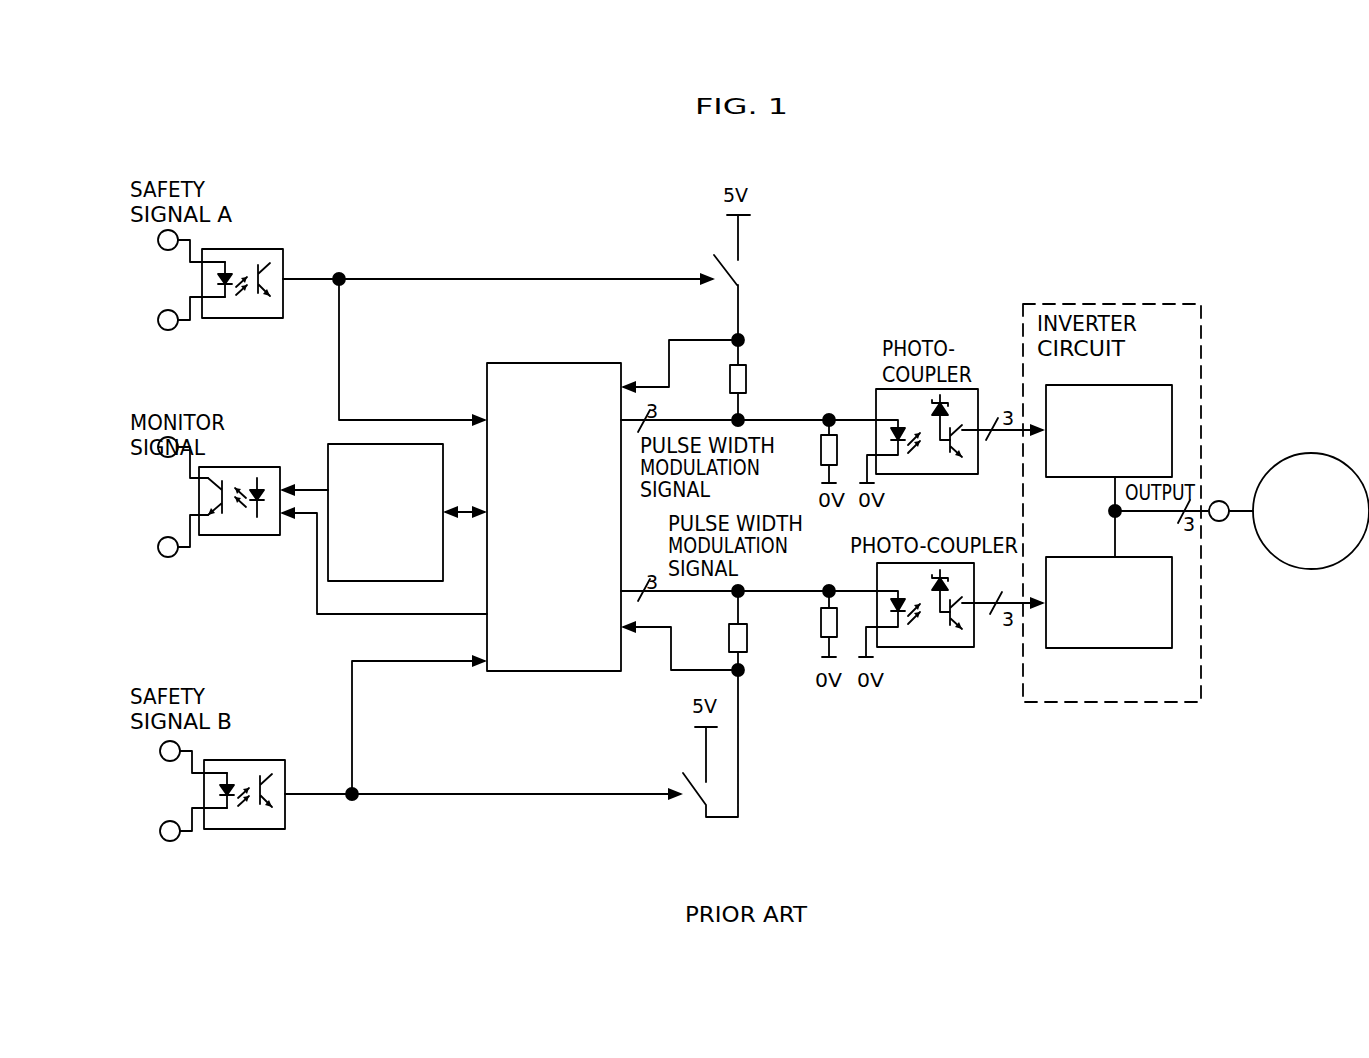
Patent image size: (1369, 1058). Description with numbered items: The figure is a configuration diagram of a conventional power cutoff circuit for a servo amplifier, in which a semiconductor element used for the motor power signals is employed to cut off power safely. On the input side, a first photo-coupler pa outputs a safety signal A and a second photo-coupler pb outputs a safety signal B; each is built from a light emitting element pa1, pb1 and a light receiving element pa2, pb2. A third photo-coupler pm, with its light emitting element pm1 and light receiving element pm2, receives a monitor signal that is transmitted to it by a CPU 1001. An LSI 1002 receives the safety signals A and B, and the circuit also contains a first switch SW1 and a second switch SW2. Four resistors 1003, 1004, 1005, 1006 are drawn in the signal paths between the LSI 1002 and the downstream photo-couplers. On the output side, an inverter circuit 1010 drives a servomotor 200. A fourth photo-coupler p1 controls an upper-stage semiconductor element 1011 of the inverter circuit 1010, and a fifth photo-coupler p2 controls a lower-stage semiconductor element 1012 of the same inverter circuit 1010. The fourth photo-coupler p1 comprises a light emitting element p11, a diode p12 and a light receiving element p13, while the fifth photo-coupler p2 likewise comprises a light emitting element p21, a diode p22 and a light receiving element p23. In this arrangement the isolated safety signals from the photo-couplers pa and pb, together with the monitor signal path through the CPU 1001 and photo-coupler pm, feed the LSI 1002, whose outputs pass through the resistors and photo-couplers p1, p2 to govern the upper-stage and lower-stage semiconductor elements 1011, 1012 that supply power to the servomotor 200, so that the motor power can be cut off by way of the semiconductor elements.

The first photo-coupler pa is at (257, 249).
The light emitting element pa1 is at (218, 279).
The light receiving element pa2 is at (283, 275).
The third photo-coupler pm is at (250, 467).
The light emitting element pm1 is at (261, 487).
The light receiving element pm2 is at (210, 505).
The second photo-coupler pb is at (259, 760).
The light emitting element pb1 is at (220, 791).
The light receiving element pb2 is at (285, 790).
The CPU 1001 is at (334, 444).
The LSI 1002 is at (520, 363).
The resistor 1003 is at (746, 373).
The resistor 1004 is at (821, 448).
The resistor 1005 is at (747, 640).
The resistor 1006 is at (821, 626).
The first switch SW1 is at (748, 263).
The second switch SW2 is at (681, 806).
The fourth photo-coupler p1 is at (905, 474).
The light emitting element p11 is at (880, 420).
The diode p12 is at (940, 410).
The light receiving element p13 is at (945, 462).
The fifth photo-coupler p2 is at (905, 647).
The light emitting element p21 is at (882, 591).
The diode p22 is at (950, 583).
The light receiving element p23 is at (953, 636).
The inverter circuit 1010 is at (1160, 304).
The upper-stage semiconductor element 1011 is at (1138, 385).
The lower-stage semiconductor element 1012 is at (1093, 648).
The servomotor 200 is at (1305, 453).